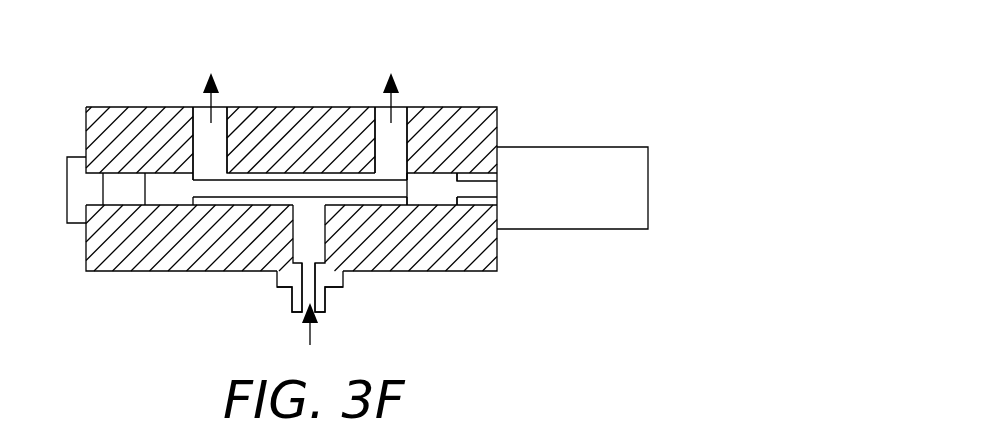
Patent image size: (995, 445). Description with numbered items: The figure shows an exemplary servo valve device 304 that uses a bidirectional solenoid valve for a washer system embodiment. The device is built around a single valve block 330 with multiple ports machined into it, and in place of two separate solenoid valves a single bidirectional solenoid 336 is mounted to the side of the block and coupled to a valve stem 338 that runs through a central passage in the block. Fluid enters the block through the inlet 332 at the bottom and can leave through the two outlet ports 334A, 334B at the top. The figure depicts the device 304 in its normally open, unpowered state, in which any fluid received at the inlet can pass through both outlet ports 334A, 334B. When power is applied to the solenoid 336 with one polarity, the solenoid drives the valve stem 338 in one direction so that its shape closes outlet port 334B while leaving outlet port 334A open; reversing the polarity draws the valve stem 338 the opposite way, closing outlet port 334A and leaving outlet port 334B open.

The servo valve device 304 is at (611, 51).
The valve block 330 is at (473, 107).
The inlet port 332 is at (266, 324).
The outlet port 334A is at (187, 81).
The outlet port 334B is at (367, 81).
The bidirectional solenoid 336 is at (577, 147).
The valve stem 338 is at (432, 196).